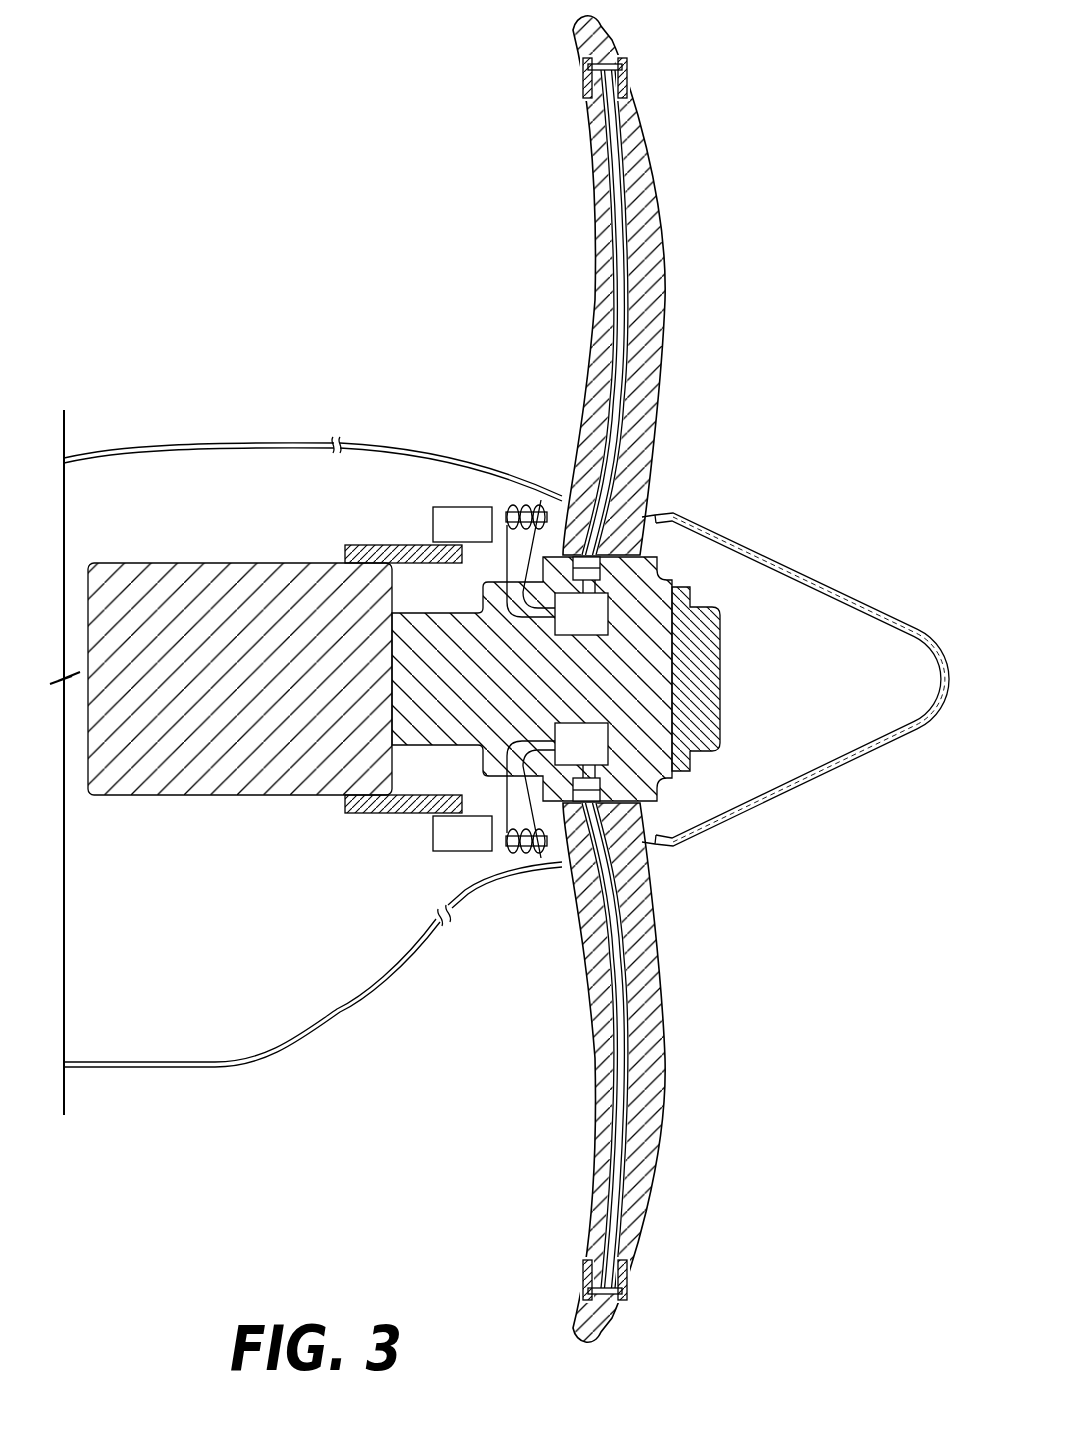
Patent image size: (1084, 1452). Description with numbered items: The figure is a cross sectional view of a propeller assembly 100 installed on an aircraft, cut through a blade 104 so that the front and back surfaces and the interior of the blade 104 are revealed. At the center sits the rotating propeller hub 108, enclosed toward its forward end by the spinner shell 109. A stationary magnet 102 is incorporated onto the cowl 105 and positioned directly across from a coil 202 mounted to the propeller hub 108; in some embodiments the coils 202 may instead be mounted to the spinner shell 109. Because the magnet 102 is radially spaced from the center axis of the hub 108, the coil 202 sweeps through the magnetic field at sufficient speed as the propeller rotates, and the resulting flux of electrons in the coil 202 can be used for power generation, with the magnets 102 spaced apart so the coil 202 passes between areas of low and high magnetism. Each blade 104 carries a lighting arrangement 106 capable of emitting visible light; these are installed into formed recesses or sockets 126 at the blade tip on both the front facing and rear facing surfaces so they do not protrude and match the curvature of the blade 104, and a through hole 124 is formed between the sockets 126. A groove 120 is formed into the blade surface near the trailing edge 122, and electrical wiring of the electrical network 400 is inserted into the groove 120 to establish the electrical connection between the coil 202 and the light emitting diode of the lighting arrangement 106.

The propulsion assembly 100 is at (499, 677).
The magnet 102 is at (448, 506).
The blade 104 is at (603, 677).
The cowl 105 is at (240, 493).
The lighting arrangement 106 is at (586, 70).
The propeller hub 108 is at (645, 747).
The spinner shell 109 is at (780, 602).
The groove 120 is at (646, 346).
The trailing edge 122 is at (603, 186).
The through hole 124 is at (601, 56).
The socket 126 is at (560, 52).
The coil 202 is at (532, 505).
The electrical network 400 is at (624, 266).